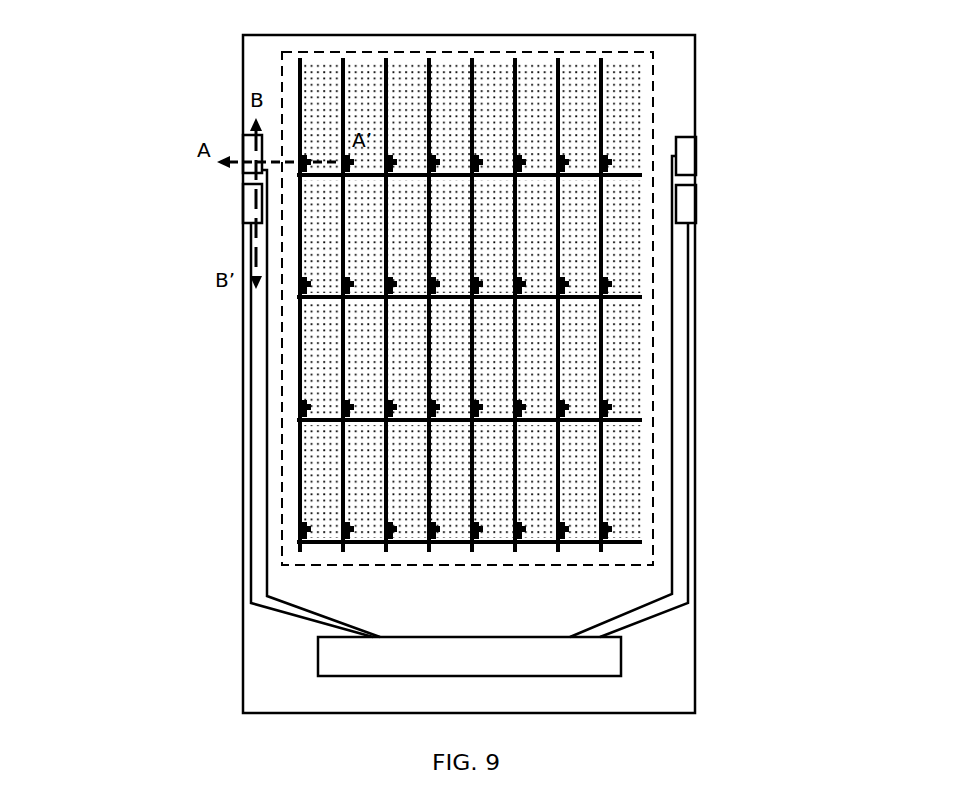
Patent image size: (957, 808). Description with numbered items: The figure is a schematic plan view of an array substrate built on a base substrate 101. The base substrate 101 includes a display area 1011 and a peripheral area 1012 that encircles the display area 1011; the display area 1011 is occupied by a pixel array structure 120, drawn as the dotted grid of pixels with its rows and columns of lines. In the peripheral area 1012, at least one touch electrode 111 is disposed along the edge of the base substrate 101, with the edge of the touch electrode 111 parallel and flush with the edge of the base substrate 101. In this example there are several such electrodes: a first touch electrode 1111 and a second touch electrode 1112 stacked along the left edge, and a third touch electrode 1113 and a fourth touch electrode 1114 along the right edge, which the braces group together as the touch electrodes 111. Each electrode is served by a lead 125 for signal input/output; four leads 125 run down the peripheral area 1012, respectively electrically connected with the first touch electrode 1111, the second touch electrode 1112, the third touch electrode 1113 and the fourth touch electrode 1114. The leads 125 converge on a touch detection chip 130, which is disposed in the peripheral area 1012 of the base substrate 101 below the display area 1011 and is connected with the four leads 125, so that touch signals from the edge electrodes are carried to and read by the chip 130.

The base substrate 101 is at (267, 683).
The display area 1011 is at (300, 490).
The peripheral area 1012 is at (282, 580).
The touch electrode 111 is at (466, 159).
The first touch electrode 1111 is at (253, 155).
The second touch electrode 1112 is at (252, 205).
The third touch electrode 1113 is at (683, 163).
The fourth touch electrode 1114 is at (683, 213).
The pixel array structure 120 is at (365, 343).
The lead 125 is at (265, 375).
The touch detection chip 130 is at (335, 660).